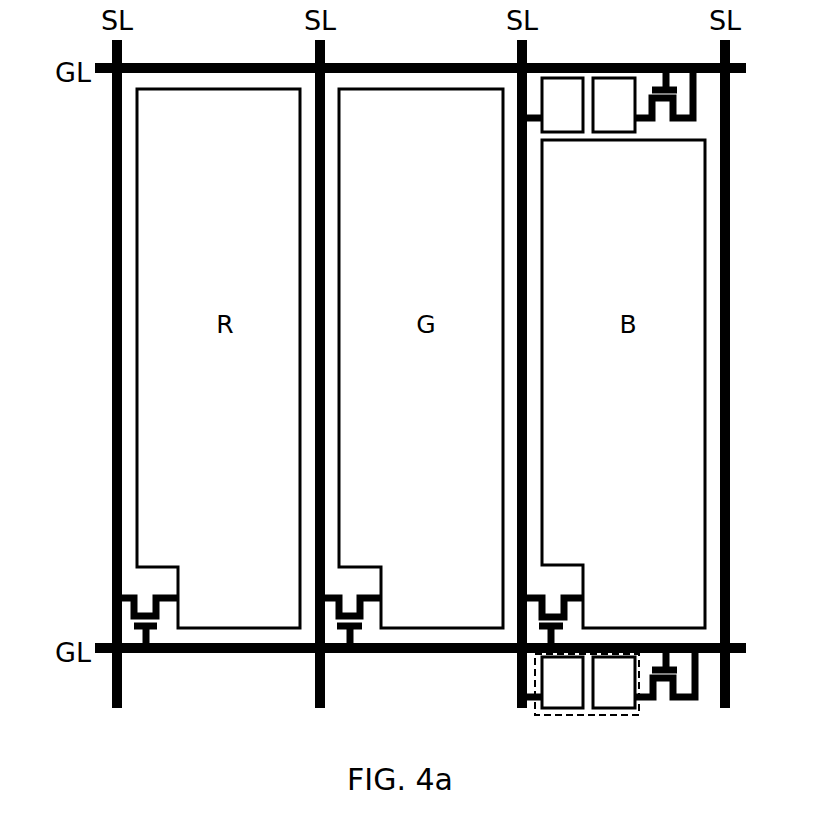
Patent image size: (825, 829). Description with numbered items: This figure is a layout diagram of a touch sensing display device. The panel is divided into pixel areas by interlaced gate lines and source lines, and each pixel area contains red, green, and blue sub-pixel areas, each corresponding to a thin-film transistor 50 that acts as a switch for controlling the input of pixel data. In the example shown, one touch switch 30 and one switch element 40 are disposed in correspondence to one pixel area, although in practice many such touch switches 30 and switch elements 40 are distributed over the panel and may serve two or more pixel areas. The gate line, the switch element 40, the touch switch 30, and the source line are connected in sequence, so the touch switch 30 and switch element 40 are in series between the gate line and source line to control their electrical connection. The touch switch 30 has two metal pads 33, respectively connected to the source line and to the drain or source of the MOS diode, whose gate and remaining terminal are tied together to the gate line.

The touch switch 30 is at (572, 717).
The metal pads 33 is at (567, 693).
The switch element 40 is at (682, 678).
The thin-film transistor 50 is at (560, 588).